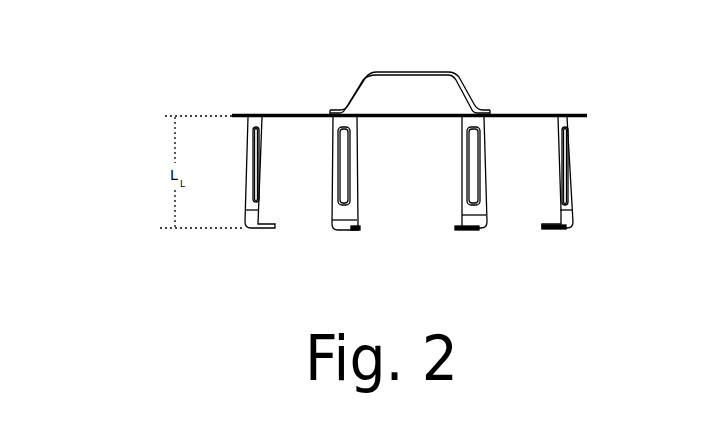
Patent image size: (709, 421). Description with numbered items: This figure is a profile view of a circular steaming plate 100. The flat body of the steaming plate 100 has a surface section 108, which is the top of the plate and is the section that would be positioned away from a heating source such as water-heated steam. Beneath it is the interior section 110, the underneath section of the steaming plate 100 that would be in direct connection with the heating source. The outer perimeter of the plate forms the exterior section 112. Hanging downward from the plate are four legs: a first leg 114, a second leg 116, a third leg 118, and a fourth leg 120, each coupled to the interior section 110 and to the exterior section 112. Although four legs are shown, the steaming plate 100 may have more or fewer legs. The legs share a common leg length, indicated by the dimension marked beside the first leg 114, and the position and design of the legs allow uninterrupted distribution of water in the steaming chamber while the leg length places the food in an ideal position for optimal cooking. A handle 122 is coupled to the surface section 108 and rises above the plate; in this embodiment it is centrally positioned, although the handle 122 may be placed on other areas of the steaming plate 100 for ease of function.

The steaming plate 100 is at (517, 60).
The surface section 108 is at (518, 114).
The interior section 110 is at (288, 117).
The exterior section 112 is at (568, 118).
The first leg 114 is at (245, 215).
The second leg 116 is at (358, 215).
The third leg 118 is at (491, 215).
The fourth leg 120 is at (573, 214).
The handle 122 is at (412, 72).